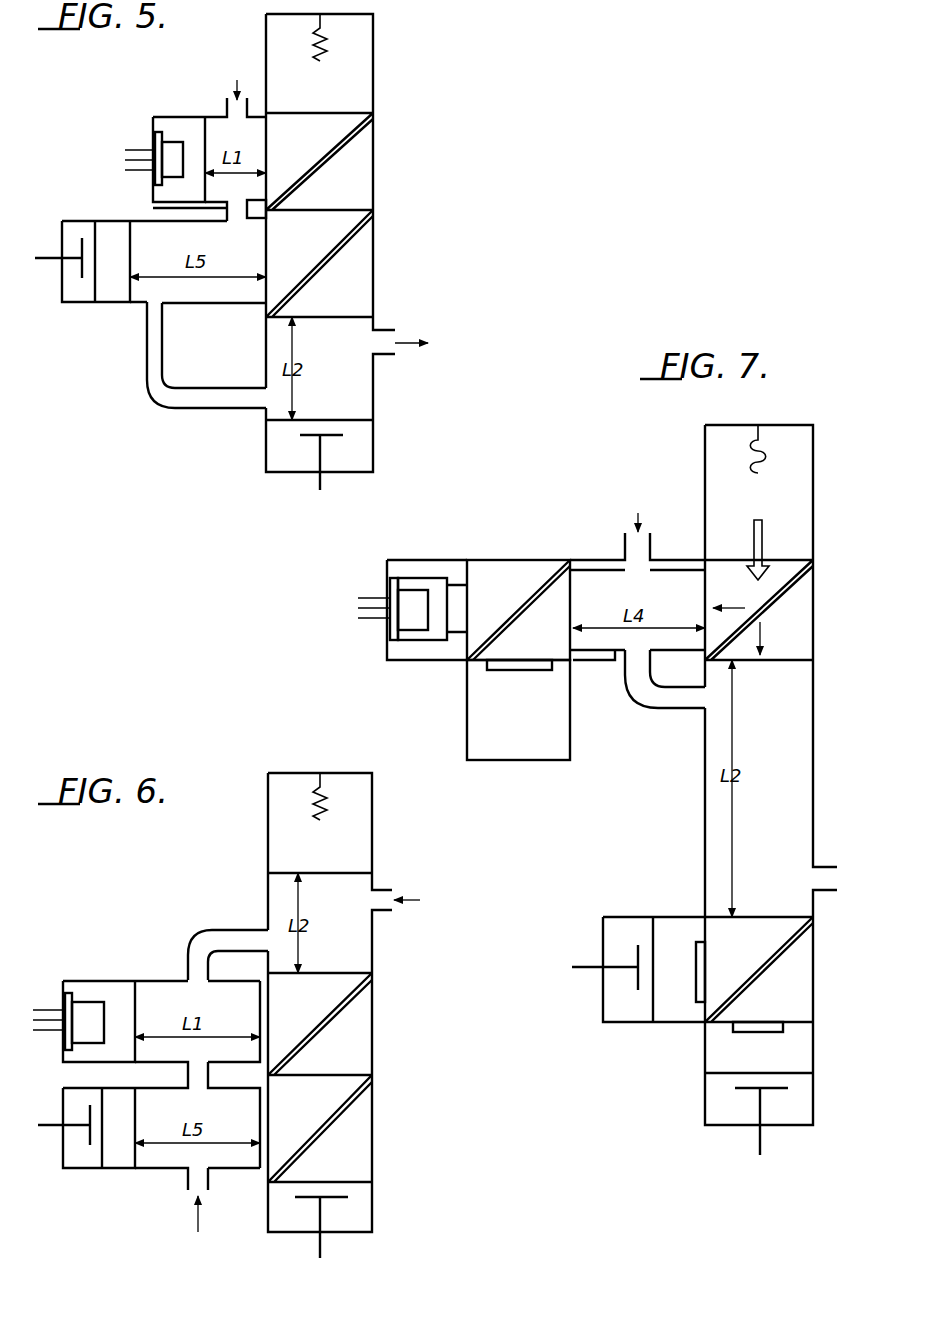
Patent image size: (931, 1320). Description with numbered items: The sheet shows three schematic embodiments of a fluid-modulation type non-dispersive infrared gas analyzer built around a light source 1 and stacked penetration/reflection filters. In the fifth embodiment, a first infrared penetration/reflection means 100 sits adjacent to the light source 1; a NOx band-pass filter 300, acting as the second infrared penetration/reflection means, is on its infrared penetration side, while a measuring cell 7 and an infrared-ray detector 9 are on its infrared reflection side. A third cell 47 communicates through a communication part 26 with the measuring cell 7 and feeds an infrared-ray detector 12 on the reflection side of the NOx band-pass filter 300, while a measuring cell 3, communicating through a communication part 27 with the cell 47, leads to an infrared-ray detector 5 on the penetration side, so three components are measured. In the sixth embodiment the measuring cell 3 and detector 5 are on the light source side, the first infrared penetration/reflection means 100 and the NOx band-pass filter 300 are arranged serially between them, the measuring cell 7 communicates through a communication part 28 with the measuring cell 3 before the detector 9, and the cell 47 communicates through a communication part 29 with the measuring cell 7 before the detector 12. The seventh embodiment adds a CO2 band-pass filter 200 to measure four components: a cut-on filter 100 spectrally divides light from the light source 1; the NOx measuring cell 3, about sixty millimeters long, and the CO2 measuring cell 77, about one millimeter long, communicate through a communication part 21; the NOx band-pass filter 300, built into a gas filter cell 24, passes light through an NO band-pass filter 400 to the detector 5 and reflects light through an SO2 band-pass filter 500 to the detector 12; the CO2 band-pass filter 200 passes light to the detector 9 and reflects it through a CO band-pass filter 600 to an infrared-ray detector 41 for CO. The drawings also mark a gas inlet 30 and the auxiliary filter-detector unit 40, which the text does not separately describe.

In FIG. 5, the light source 1 is at (373, 62).
In FIG. 6, the light source 1 is at (372, 830).
In FIG. 7, the light source 1 is at (813, 493).
In FIG. 5, the NOx measuring cell 3 is at (373, 378).
In FIG. 6, the NOx measuring cell 3 is at (372, 940).
In FIG. 7, the NOx measuring cell 3 is at (813, 770).
In FIG. 5, the infrared-ray detector for NOx 5 is at (373, 445).
In FIG. 6, the infrared-ray detector for NOx 5 is at (372, 1207).
In FIG. 7, the infrared-ray detector for NOx 5 is at (705, 1098).
In FIG. 5, the measuring cell 7 is at (213, 112).
In FIG. 6, the measuring cell 7 is at (156, 980).
In FIG. 5, the infrared-ray detector for CO2 9 is at (150, 132).
In FIG. 6, the infrared-ray detector for CO2 9 is at (62, 997).
In FIG. 7, the infrared-ray detector for CO2 9 is at (385, 590).
In FIG. 5, the infrared-ray detector for SO2 12 is at (80, 305).
In FIG. 6, the infrared-ray detector for SO2 12 is at (80, 1170).
In FIG. 7, the infrared-ray detector for SO2 12 is at (625, 1024).
In FIG. 7, the communication part 21 is at (668, 710).
In FIG. 7, the gas filter cell 24 is at (813, 985).
In FIG. 5, the communication part 26 is at (155, 208).
In FIG. 5, the communication part 27 is at (147, 392).
In FIG. 6, the communication part 28 is at (212, 928).
In FIG. 6, the communication part 29 is at (187, 1077).
In FIG. 5, the inlet port 30 is at (235, 84).
In FIG. 6, the inlet port 30 is at (422, 901).
In FIG. 7, the inlet port 30 is at (637, 529).
In FIG. 7, the auxiliary valve unit 40 is at (455, 548).
In FIG. 7, the infrared-ray detector for CO 41 is at (540, 762).
In FIG. 5, the third cell 47 is at (136, 308).
In FIG. 6, the third cell 47 is at (172, 1172).
In FIG. 7, the CO2 measuring cell 77 is at (618, 664).
In FIG. 5, the first infrared penetration/reflection means 100 is at (350, 138).
In FIG. 6, the first infrared penetration/reflection means 100 is at (350, 998).
In FIG. 7, the first infrared penetration/reflection means 100 is at (795, 588).
In FIG. 7, the CO2 band-pass filter 200 is at (526, 577).
In FIG. 5, the NOx band-pass filter 300 is at (350, 238).
In FIG. 6, the NOx band-pass filter 300 is at (350, 1103).
In FIG. 7, the NOx band-pass filter 300 is at (800, 938).
In FIG. 7, the NO band-pass filter 400 is at (780, 1033).
In FIG. 7, the SO2 band-pass filter 500 is at (692, 1004).
In FIG. 7, the CO band-pass filter 600 is at (496, 680).